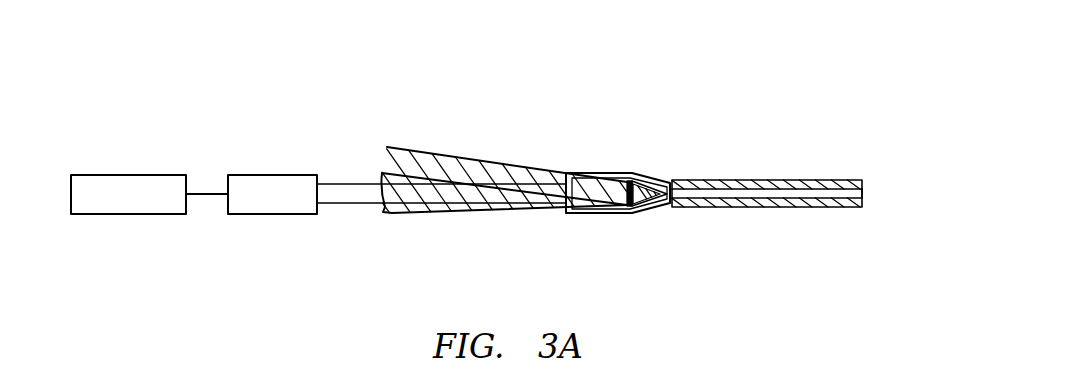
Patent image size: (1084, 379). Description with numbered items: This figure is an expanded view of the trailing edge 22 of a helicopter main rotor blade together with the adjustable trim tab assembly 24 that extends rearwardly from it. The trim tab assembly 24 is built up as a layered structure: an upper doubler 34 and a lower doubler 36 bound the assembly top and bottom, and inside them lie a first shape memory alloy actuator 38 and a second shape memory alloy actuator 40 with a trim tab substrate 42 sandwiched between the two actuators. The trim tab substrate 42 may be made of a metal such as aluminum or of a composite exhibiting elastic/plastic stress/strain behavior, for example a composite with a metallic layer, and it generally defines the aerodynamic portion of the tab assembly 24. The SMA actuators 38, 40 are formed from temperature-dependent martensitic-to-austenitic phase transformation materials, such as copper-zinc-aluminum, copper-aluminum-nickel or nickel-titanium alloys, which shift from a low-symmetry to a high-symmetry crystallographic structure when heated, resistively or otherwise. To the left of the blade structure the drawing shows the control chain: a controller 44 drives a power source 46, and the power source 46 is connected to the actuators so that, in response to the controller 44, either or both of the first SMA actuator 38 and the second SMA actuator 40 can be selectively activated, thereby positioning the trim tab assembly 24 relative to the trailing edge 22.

The trailing edge 22 is at (445, 152).
The trim tab assembly 24 is at (641, 147).
The upper doubler 34 is at (612, 172).
The lower doubler 36 is at (597, 215).
The first shape memory alloy actuator 38 is at (815, 180).
The second shape memory alloy actuator 40 is at (803, 208).
The trim tab substrate 42 is at (862, 193).
The controller 44 is at (140, 214).
The power source 46 is at (275, 214).